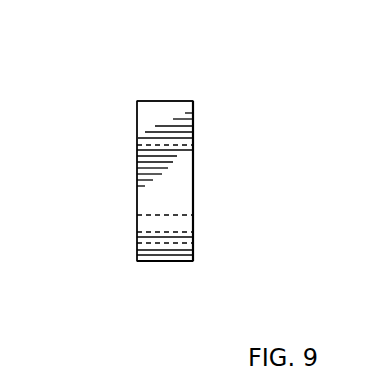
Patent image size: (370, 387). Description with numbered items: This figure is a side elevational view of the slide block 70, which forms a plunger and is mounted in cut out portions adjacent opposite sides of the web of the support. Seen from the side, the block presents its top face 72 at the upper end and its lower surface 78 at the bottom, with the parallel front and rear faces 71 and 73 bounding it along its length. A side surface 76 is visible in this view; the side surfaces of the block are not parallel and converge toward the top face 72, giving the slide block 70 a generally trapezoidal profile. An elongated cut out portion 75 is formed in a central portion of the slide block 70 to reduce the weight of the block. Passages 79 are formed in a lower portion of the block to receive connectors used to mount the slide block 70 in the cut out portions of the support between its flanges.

The slide block 70 is at (209, 112).
The front face 71 is at (137, 194).
The top face 72 is at (162, 101).
The rear face 73 is at (194, 205).
The elongated cut out portion 75 is at (178, 157).
The side surface 76 is at (170, 187).
The lower surface 78 is at (153, 262).
The passages 79 is at (176, 232).